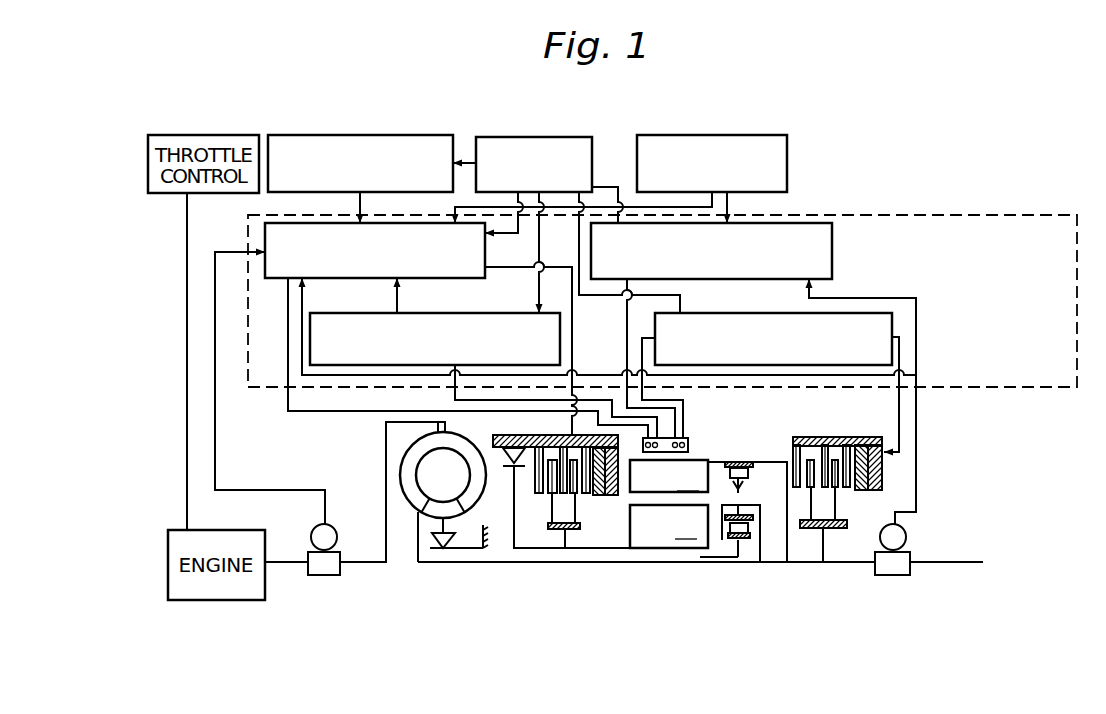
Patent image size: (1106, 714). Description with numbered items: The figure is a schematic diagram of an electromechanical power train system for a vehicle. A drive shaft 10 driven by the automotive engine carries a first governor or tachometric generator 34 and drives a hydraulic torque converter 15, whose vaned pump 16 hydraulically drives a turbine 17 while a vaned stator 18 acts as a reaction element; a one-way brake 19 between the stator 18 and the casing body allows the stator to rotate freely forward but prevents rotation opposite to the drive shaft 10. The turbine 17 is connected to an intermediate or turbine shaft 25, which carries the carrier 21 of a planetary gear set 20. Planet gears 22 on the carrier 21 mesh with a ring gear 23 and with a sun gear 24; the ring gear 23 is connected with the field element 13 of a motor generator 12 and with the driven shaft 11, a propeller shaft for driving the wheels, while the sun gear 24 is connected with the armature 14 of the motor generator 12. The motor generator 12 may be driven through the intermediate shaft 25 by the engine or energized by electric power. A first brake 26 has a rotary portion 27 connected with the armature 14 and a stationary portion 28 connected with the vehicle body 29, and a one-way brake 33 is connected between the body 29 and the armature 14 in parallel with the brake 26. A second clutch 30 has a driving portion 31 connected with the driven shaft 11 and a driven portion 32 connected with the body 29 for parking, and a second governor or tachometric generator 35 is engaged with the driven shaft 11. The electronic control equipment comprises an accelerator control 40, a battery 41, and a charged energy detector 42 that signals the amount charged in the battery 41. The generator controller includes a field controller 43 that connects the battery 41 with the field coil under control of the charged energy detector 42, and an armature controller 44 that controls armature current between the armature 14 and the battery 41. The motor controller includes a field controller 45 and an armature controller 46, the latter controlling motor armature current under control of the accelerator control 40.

The drive shaft 10 is at (280, 565).
The driven shaft 11 is at (863, 565).
The motor generator 12 is at (660, 549).
The field element 13 is at (669, 476).
The armature 14 is at (669, 526).
The hydraulic torque converter 15 is at (443, 552).
The pump 16 is at (478, 490).
The turbine 17 is at (412, 460).
The stator 18 is at (435, 512).
The one-way brake 19 is at (430, 548).
The planetary gear set 20 is at (700, 557).
The carrier 21 is at (763, 513).
The planet gears 22 is at (741, 481).
The contactor 23 is at (748, 462).
The sun gear 24 is at (753, 537).
The intermediate shaft 25 is at (513, 565).
The first brake 26 is at (567, 540).
The rotary portion 27 is at (577, 505).
The stationary portion 28 is at (561, 446).
The body 29 is at (524, 446).
The second clutch 30 is at (818, 550).
The driving portion 31 is at (838, 505).
The driven portion 32 is at (823, 442).
The one-way brake 33 is at (502, 452).
The first governor 34 is at (323, 526).
The second governor 35 is at (906, 537).
The accelerator control 40 is at (710, 135).
The battery 41 is at (528, 135).
The charged energy detector 42 is at (338, 134).
The field controller 43 is at (277, 280).
The armature controller 44 is at (457, 306).
The field controller 45 is at (833, 247).
The armature controller 46 is at (744, 308).